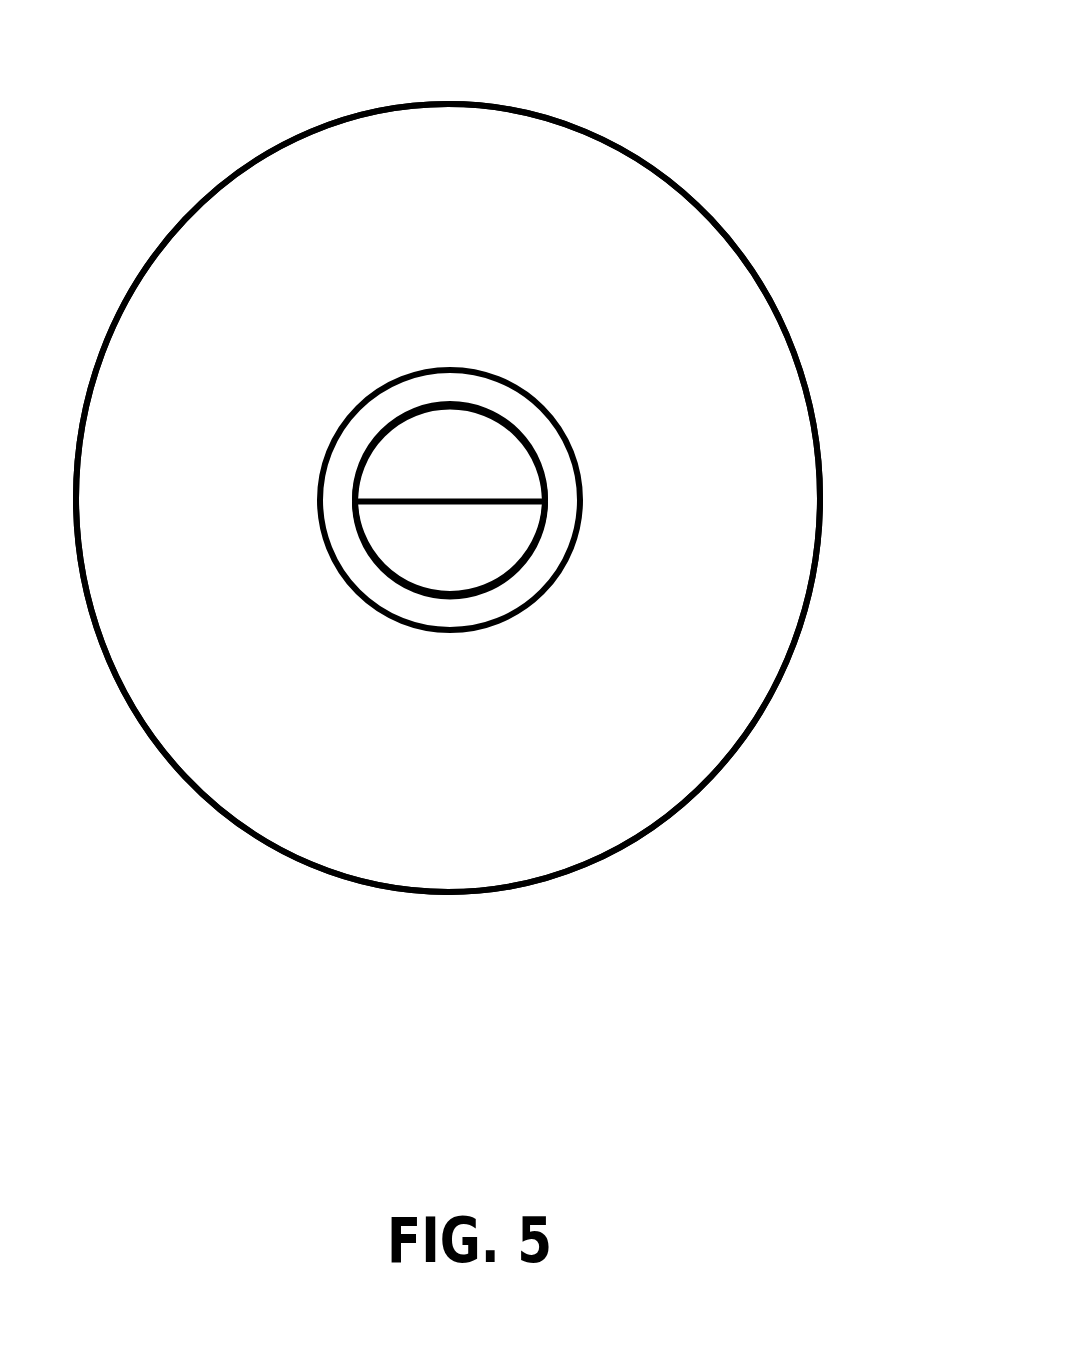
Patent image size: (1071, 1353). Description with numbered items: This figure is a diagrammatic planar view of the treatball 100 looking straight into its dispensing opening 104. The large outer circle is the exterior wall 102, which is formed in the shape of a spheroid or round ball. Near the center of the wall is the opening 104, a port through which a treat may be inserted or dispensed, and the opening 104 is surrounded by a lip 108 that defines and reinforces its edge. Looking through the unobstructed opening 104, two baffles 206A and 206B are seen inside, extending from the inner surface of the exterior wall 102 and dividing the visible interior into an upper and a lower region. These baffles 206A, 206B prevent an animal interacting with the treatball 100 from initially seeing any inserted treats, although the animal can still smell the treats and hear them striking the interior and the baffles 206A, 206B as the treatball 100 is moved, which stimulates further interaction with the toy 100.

The treatball 100 is at (675, 76).
The exterior wall 102 is at (168, 243).
The opening 104 is at (400, 524).
The lip 108 is at (377, 580).
The baffle 206A is at (473, 478).
The baffle 206B is at (483, 547).